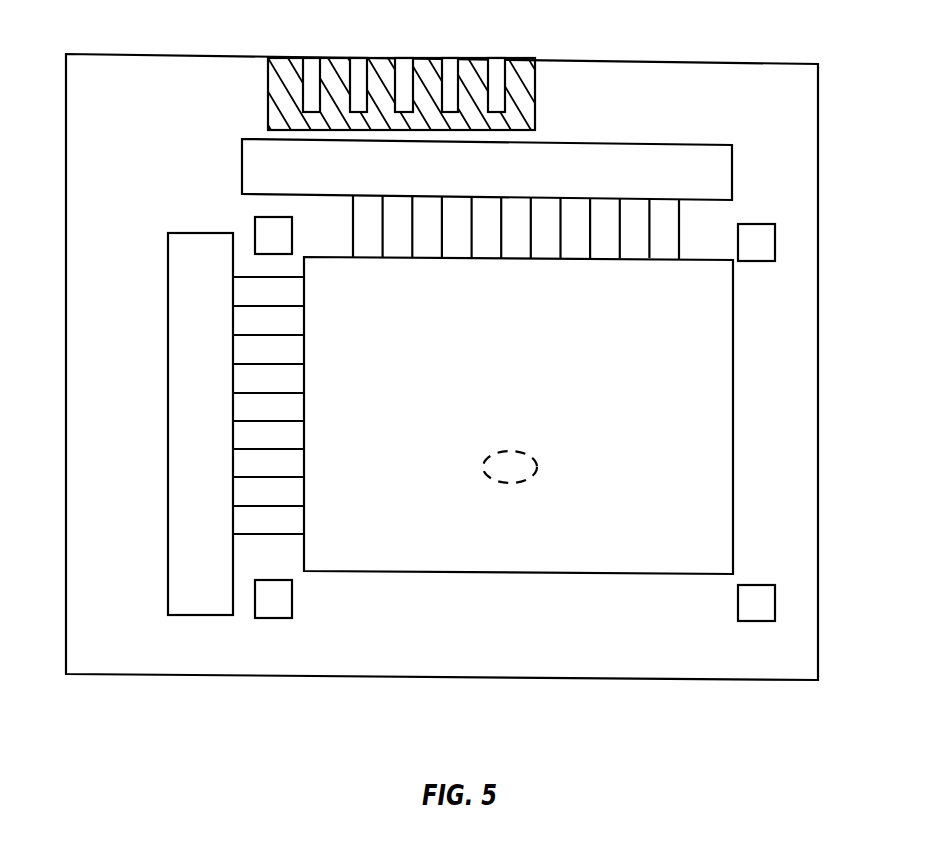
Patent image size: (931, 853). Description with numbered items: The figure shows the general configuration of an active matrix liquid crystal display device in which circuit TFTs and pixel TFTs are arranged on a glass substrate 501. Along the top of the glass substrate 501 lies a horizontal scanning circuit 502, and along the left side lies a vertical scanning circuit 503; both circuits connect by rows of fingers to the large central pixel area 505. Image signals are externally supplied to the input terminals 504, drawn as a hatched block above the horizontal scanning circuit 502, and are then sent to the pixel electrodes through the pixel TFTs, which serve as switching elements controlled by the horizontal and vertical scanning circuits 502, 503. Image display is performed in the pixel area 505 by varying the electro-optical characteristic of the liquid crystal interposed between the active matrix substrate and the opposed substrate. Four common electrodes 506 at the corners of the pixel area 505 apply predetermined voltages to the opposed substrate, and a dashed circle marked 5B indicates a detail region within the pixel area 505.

The glass substrate 501 is at (428, 414).
The horizontal scanning circuit 502 is at (487, 169).
The vertical scanning circuit 503 is at (200, 424).
The input terminals 504 is at (399, 65).
The pixel area 505 is at (554, 415).
The common electrodes 506 is at (469, 496).
The detail region of FIG. 5B is at (529, 450).